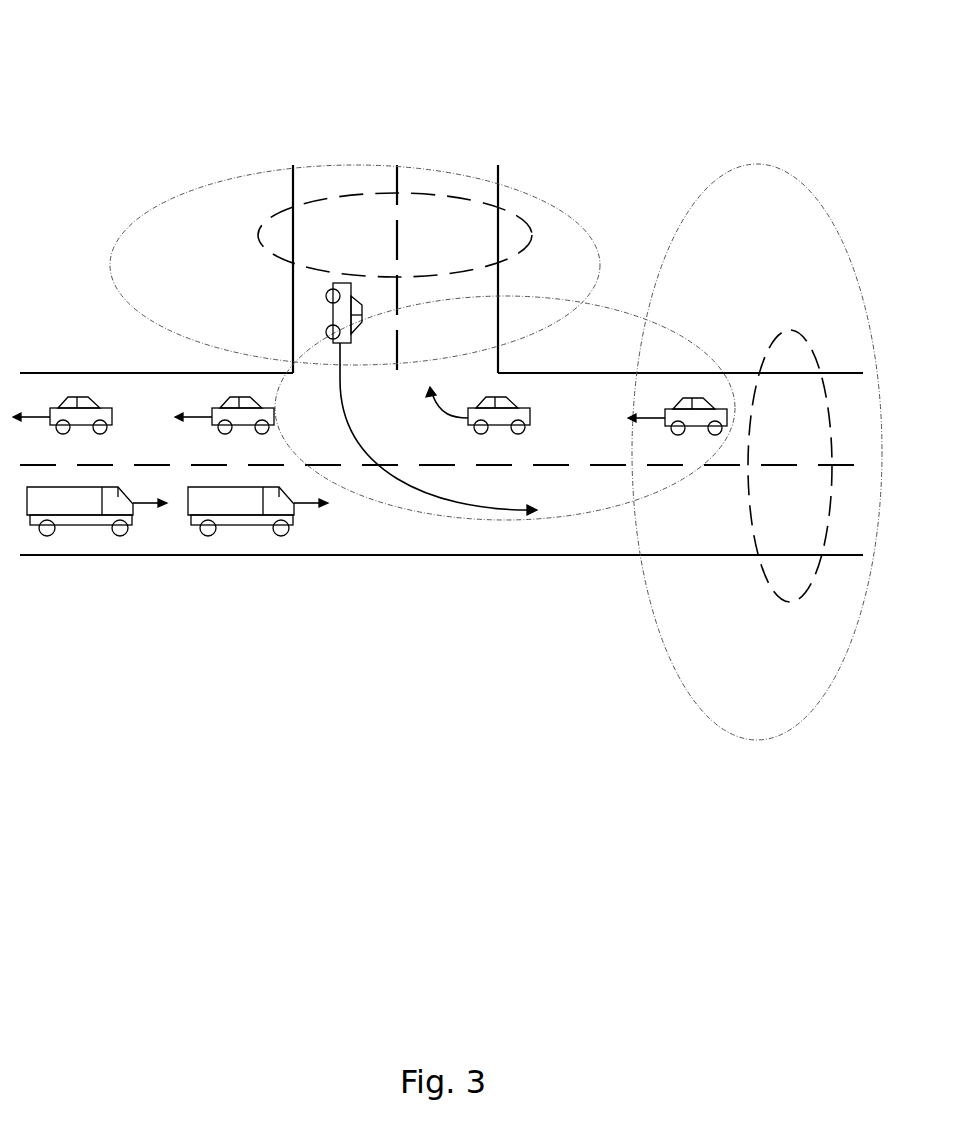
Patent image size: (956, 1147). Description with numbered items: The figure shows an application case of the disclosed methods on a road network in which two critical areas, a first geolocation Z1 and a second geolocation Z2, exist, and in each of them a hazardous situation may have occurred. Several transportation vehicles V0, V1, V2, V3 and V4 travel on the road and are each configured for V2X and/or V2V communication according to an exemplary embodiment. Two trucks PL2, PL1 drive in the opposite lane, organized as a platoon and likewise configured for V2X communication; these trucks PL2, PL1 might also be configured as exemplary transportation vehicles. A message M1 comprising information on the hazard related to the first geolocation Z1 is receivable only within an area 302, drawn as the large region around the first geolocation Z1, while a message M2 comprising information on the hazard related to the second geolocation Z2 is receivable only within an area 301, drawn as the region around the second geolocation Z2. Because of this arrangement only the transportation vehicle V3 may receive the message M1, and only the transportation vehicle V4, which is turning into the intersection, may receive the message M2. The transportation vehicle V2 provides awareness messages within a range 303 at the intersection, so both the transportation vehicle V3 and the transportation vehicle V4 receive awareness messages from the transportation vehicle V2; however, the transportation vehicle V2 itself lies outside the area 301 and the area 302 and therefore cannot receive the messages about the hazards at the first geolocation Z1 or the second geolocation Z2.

The area 301 is at (243, 172).
The area 302 is at (705, 198).
The range 303 is at (443, 515).
The message M1 is at (757, 452).
The message M2 is at (355, 265).
The first geolocation Z1 is at (800, 342).
The second geolocation Z2 is at (530, 228).
The transportation vehicle V0 is at (86, 397).
The transportation vehicle V1 is at (253, 397).
The transportation vehicle V2 is at (502, 396).
The transportation vehicle V3 is at (703, 398).
The transportation vehicle V4 is at (332, 312).
The truck PL1 is at (248, 528).
The truck PL2 is at (70, 527).